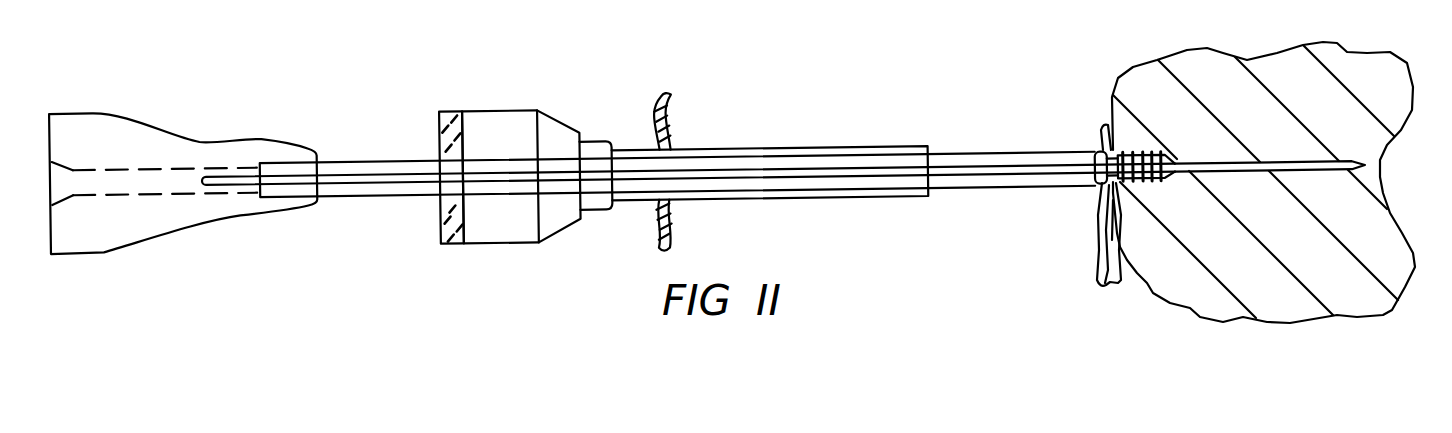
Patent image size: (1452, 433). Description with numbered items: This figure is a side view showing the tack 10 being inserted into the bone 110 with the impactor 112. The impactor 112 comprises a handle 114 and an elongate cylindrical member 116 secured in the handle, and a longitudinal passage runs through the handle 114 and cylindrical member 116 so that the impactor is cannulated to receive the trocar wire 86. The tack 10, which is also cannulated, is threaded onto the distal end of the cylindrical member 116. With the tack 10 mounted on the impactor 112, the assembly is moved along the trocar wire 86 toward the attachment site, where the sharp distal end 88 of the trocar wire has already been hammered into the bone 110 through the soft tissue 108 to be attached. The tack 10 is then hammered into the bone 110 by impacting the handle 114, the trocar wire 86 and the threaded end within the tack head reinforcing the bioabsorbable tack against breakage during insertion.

The tack 10 is at (1141, 180).
The trocar wire 86 is at (225, 170).
The sharp distal end 88 is at (1370, 158).
The soft tissue 108 is at (1098, 148).
The bone 110 is at (1140, 85).
The impactor 112 is at (381, 156).
The handle 114 is at (147, 230).
The elongate cylindrical member 116 is at (977, 198).